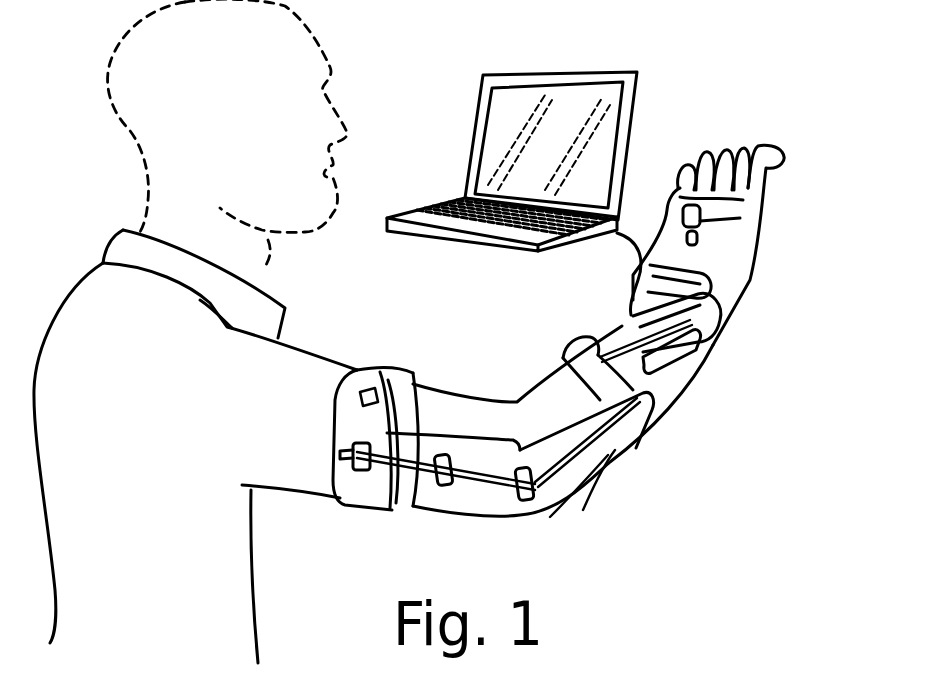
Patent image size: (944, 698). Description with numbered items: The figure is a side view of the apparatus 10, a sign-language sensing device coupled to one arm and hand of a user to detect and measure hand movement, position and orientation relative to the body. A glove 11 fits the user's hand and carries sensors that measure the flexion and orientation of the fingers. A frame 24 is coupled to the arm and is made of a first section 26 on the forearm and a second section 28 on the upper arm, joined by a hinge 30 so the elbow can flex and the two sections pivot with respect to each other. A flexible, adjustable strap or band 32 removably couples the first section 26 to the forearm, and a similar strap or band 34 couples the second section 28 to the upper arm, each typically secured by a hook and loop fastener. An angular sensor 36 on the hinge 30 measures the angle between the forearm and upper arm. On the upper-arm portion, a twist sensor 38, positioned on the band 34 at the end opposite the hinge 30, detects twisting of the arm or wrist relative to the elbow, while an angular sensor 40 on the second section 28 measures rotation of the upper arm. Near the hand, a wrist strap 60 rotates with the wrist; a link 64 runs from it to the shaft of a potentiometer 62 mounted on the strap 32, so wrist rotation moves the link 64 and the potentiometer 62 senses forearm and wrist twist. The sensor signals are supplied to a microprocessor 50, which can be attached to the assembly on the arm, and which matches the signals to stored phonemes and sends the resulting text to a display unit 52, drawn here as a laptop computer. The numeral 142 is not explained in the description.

The apparatus 10 is at (774, 432).
The glove 11 is at (770, 235).
The frame 24 is at (410, 468).
The first section 26 is at (570, 455).
The second section 28 is at (480, 490).
The hinge 30 is at (552, 518).
The strap or band 32 is at (650, 437).
The strap or band 34 is at (367, 513).
The angular sensor 36 is at (570, 497).
The twist sensor 38 is at (340, 428).
The angular sensor 40 is at (445, 510).
The microprocessor 50 is at (687, 372).
The display unit 52 is at (600, 68).
The wrist strap 60 is at (707, 347).
The potentiometer 62 is at (575, 353).
The link 64 is at (623, 327).
The sensor on cuff 142 is at (372, 392).